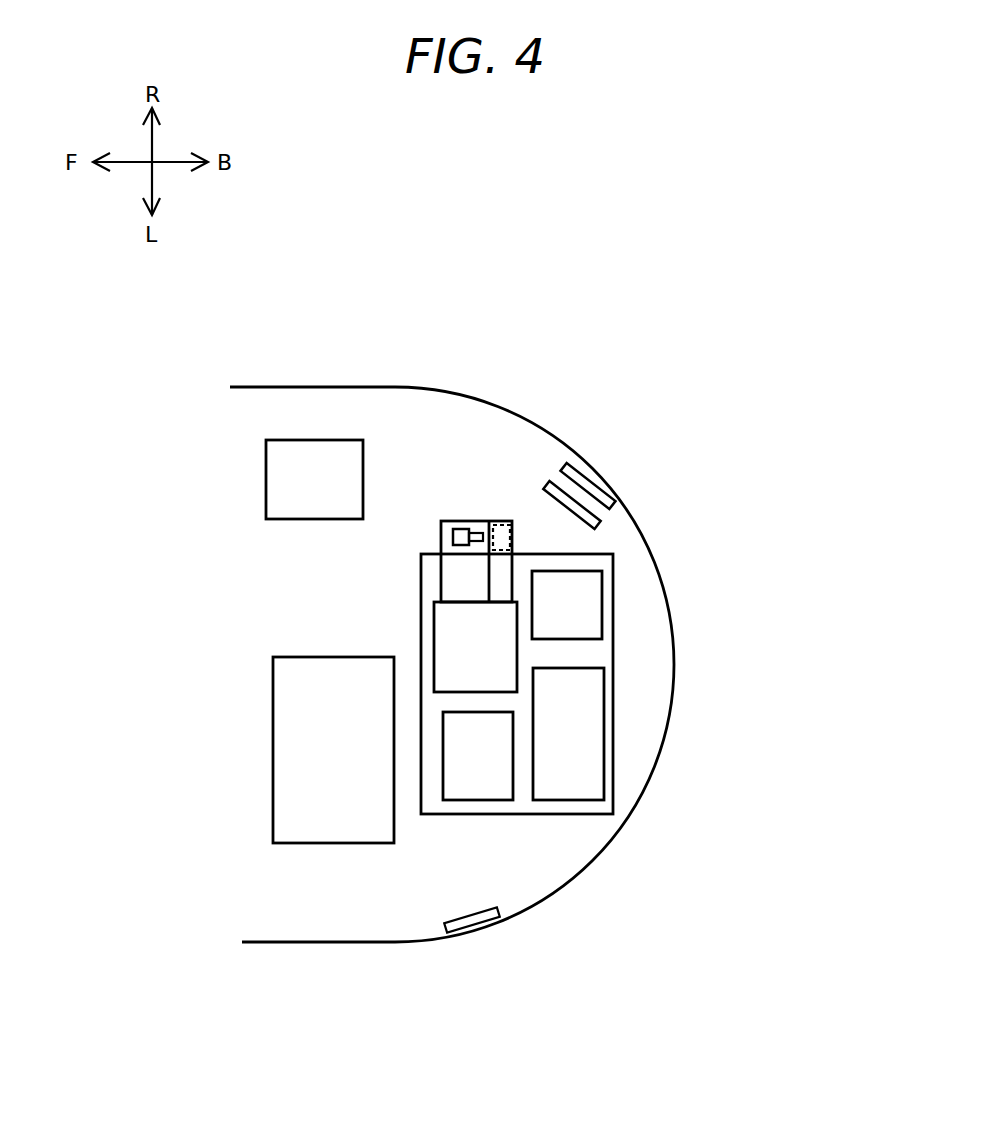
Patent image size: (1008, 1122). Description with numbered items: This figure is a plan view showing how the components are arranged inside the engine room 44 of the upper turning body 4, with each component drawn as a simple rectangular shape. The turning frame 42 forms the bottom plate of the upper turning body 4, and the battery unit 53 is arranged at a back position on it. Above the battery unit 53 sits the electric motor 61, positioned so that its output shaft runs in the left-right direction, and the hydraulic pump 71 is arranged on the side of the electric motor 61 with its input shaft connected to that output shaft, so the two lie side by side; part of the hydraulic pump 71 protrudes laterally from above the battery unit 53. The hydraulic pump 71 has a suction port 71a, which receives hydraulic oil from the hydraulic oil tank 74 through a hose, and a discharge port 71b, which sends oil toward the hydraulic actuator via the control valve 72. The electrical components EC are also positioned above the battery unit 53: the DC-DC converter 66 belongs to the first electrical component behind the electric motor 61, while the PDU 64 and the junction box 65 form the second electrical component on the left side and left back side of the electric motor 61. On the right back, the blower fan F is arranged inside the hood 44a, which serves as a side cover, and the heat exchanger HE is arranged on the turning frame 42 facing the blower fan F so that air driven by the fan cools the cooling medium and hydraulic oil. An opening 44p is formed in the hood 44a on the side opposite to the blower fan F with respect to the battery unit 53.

The upper turning body 4 is at (682, 295).
The engine room 44 is at (182, 518).
The hood 44a is at (625, 823).
The opening 44p is at (478, 933).
The turning frame 42 is at (375, 893).
The hydraulic oil tank 74 is at (313, 463).
The control valve 72 is at (323, 758).
The hydraulic pump 71 is at (462, 575).
The suction port 71a is at (510, 533).
The discharge port 71b is at (481, 533).
The heat exchanger HE is at (545, 482).
The blower fan F is at (583, 482).
The battery unit 53 is at (578, 655).
The electric motor 61 is at (450, 655).
The electrical components EC is at (611, 625).
The DC-DC converter 66 is at (585, 604).
The junction box 65 is at (580, 747).
The PDU 64 is at (482, 765).